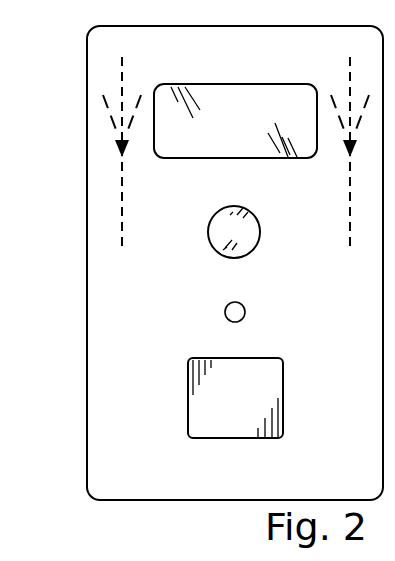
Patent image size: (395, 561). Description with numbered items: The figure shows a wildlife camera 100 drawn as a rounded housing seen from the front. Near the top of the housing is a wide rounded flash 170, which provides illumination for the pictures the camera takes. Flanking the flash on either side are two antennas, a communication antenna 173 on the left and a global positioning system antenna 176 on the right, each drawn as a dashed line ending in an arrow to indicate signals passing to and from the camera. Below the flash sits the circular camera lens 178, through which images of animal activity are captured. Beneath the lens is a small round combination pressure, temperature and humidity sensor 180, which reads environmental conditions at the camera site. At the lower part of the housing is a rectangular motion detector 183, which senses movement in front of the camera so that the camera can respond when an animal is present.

The camera 100 is at (87, 340).
The flash 170 is at (243, 84).
The communication antenna 173 is at (124, 222).
The global positioning system antenna 176 is at (349, 240).
The camera lens 178 is at (261, 229).
The combination pressure, temperature and humidity sensor 180 is at (226, 314).
The motion detector 183 is at (188, 432).